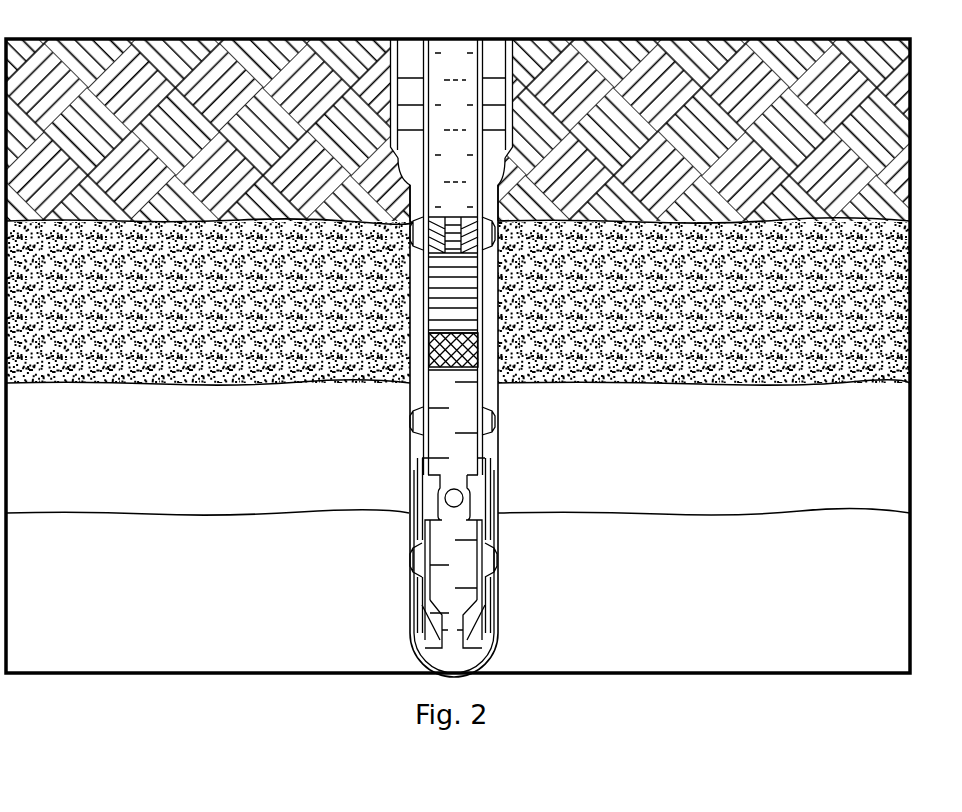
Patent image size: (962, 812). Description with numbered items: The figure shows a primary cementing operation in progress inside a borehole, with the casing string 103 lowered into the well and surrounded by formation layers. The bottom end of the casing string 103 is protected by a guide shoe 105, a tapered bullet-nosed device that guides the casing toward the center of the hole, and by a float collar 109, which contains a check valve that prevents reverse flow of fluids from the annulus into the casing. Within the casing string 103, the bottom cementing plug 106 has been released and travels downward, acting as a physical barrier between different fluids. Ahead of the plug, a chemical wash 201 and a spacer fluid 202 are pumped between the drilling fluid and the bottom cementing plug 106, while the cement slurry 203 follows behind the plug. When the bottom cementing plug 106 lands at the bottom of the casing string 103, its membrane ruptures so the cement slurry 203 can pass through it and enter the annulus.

The casing string 103 is at (452, 465).
The guide shoe 105 is at (480, 607).
The bottom cementing plug 106 is at (502, 213).
The float collar 109 is at (480, 507).
The chemical wash 201 is at (430, 347).
The spacer fluid 202 is at (457, 302).
The cement slurry 203 is at (447, 152).